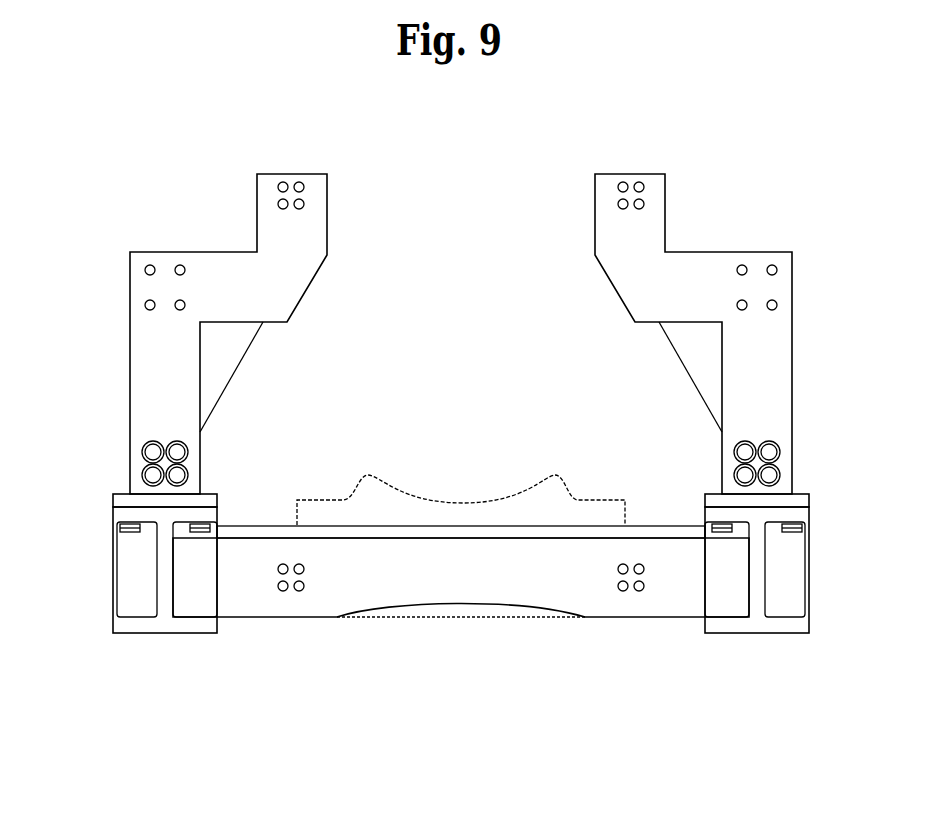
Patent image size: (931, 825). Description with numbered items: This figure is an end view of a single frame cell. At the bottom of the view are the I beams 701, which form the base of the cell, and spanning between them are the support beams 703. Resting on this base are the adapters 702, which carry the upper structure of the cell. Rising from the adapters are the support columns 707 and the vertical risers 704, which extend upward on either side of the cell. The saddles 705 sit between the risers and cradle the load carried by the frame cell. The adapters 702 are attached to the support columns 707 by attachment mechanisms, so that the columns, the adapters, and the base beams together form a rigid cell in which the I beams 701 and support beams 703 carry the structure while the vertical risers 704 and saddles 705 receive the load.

The I beam 701 is at (130, 590).
The adapter 702 is at (715, 498).
The support beam 703 is at (417, 578).
The vertical riser 704 is at (637, 172).
The saddle 705 is at (443, 515).
The support column 707 is at (243, 287).